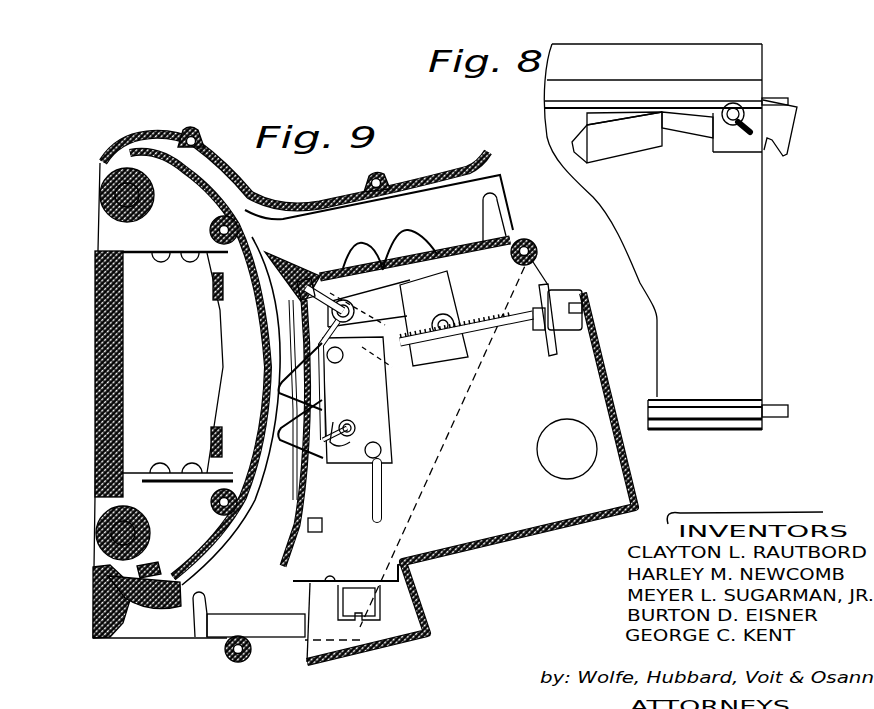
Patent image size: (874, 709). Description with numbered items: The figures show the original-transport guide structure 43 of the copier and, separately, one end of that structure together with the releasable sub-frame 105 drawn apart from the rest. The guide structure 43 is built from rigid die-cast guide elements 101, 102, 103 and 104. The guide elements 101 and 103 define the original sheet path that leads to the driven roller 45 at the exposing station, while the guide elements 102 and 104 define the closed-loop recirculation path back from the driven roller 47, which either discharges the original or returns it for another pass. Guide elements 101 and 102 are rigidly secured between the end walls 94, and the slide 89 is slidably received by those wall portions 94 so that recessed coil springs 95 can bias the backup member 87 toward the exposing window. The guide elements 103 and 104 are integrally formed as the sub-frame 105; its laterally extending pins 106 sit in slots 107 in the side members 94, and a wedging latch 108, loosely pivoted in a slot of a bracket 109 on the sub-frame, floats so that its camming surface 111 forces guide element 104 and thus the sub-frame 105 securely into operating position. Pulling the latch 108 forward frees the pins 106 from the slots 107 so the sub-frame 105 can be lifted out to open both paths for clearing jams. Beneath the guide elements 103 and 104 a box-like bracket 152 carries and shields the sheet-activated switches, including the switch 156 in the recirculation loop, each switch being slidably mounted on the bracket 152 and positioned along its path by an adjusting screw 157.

In FIG. 9, the guide structure 43 is at (250, 184).
In FIG. 9, the driven roller 45 is at (140, 217).
In FIG. 9, the driven roller 47 is at (148, 537).
In FIG. 9, the backup member 87 is at (120, 334).
In FIG. 9, the slide 89 is at (188, 364).
In FIG. 9, the wall portion 94 is at (280, 620).
In FIG. 9, the recessed coil spring 95 is at (229, 300).
In FIG. 9, the guide element 101 is at (284, 208).
In FIG. 9, the guide element 102 is at (217, 208).
In FIG. 9, the guide element 103 is at (469, 250).
In FIG. 8, the guide element 103 is at (678, 56).
In FIG. 9, the guide element 104 is at (312, 506).
In FIG. 8, the guide element 104 is at (760, 277).
In FIG. 9, the sub-frame 105 is at (432, 560).
In FIG. 9, the pin 106 is at (529, 246).
In FIG. 8, the pin 106 is at (784, 96).
In FIG. 9, the slot 107 is at (498, 210).
In FIG. 9, the wedging latch 108 is at (396, 372).
In FIG. 8, the wedging latch 108 is at (648, 150).
In FIG. 8, the bracket 109 is at (737, 153).
In FIG. 8, the camming surface 111 is at (800, 107).
In FIG. 9, the box-like bracket 152 is at (634, 480).
In FIG. 9, the switch 156 is at (385, 418).
In FIG. 9, the adjusting screw 157 is at (505, 331).